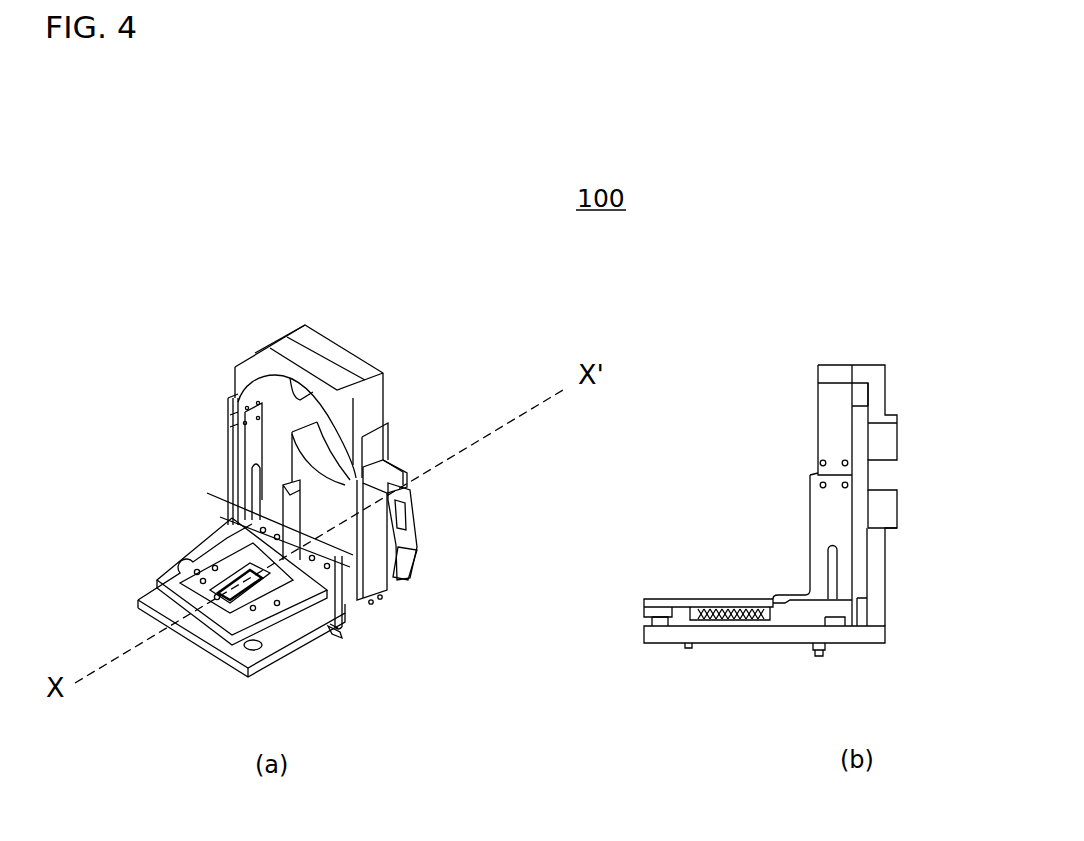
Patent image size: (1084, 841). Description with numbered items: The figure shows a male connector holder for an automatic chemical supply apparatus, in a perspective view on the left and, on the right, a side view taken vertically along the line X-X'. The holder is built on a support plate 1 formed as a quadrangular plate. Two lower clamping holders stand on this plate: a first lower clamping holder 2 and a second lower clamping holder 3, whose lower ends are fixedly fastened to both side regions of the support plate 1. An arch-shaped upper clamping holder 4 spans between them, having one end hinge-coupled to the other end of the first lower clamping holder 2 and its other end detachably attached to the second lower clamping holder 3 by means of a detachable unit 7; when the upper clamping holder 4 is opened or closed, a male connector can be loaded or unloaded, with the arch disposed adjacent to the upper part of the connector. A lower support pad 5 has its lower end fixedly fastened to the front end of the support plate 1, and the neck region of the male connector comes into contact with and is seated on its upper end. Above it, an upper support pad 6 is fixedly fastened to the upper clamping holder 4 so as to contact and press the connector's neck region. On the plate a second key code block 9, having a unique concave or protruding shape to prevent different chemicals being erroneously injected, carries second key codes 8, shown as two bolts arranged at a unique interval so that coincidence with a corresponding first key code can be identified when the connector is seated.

The support plate 1 is at (300, 643).
The first lower clamping holder 2 is at (232, 452).
The second lower clamping holder 3 is at (390, 584).
The upper clamping holder 4 is at (383, 425).
The lower support pad 5 is at (233, 372).
The upper support pad 6 is at (330, 347).
The detachable unit 7 is at (400, 505).
The second key codes 8 is at (228, 488).
The second key code block 9 is at (226, 520).